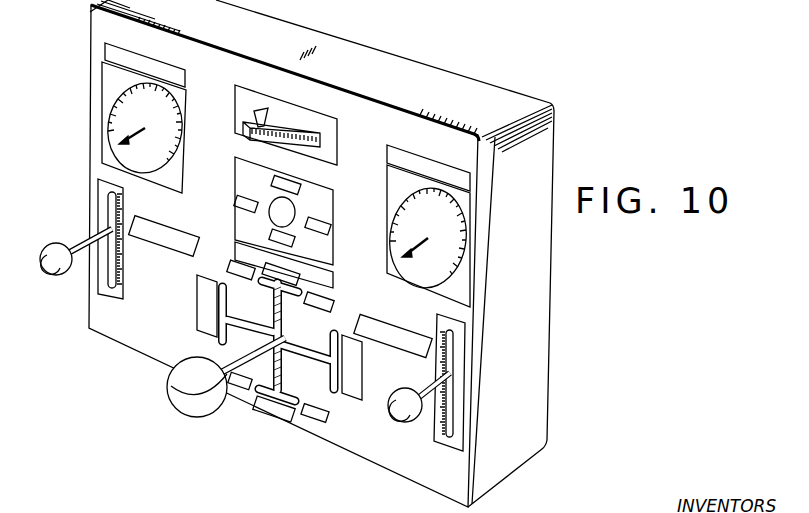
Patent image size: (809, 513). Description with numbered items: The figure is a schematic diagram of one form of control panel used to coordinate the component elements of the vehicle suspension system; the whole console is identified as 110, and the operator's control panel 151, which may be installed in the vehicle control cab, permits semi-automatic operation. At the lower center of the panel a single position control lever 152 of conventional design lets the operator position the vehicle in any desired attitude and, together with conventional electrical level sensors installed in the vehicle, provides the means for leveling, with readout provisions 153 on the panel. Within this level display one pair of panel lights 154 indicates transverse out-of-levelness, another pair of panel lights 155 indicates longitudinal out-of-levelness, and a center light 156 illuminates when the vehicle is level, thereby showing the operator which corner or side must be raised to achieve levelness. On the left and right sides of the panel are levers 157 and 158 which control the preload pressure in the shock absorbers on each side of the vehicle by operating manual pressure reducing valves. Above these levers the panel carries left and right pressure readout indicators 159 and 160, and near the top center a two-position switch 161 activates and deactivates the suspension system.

The control console 110 is at (321, 253).
The operator's control panel 151 is at (442, 63).
The single position control lever 152 is at (177, 398).
The readout provisions 153 is at (307, 178).
The pair of panel lights 154 is at (333, 228).
The pair of panel lights 155 is at (299, 189).
The center light 156 is at (295, 209).
The lever 157 is at (52, 249).
The lever 158 is at (397, 412).
The left pressure readout indicator 159 is at (120, 118).
The right pressure readout indicator 160 is at (467, 267).
The two-position switch 161 is at (283, 118).